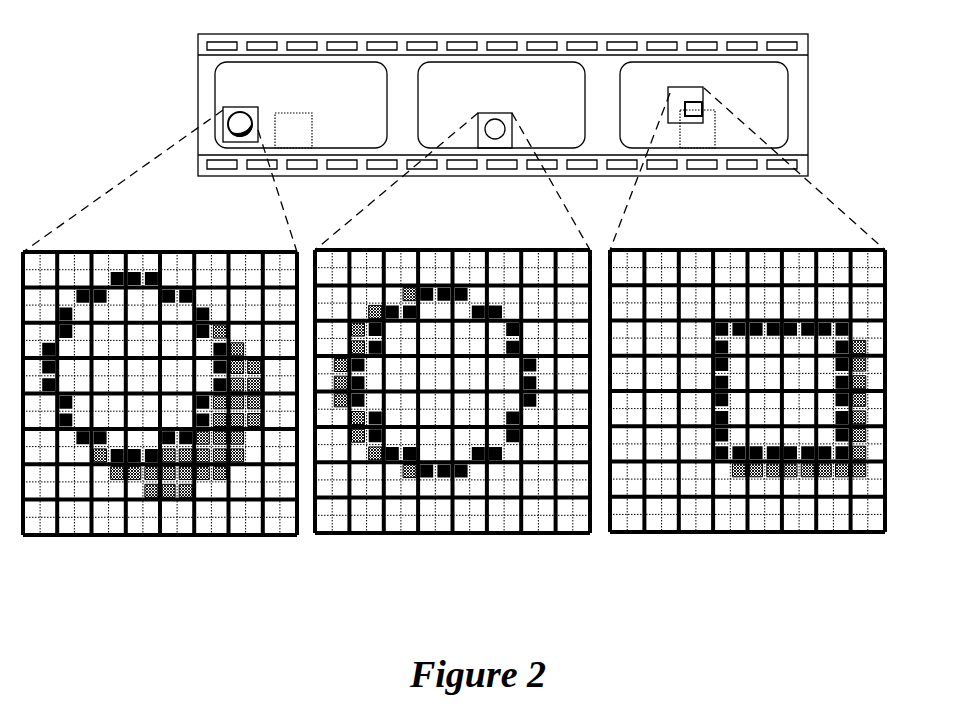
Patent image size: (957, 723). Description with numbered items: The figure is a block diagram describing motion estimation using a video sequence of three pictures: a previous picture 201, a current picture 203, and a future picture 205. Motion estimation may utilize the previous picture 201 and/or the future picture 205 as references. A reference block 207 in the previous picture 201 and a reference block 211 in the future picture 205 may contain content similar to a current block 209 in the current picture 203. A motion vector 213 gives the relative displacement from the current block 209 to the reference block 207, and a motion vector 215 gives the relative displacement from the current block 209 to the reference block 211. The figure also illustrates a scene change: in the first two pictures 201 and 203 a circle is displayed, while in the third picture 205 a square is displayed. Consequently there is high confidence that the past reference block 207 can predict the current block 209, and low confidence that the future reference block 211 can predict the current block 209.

The previous picture 201 is at (297, 81).
The current picture 203 is at (501, 105).
The future picture 205 is at (704, 80).
The reference block 207 is at (143, 535).
The current block 209 is at (403, 533).
The reference block 211 is at (653, 532).
The motion vector 213 is at (264, 110).
The motion vector 215 is at (683, 97).